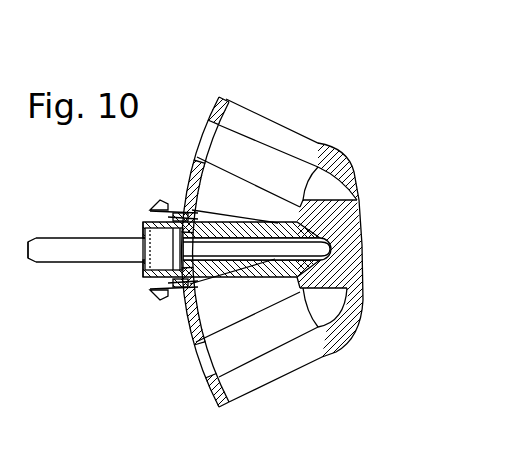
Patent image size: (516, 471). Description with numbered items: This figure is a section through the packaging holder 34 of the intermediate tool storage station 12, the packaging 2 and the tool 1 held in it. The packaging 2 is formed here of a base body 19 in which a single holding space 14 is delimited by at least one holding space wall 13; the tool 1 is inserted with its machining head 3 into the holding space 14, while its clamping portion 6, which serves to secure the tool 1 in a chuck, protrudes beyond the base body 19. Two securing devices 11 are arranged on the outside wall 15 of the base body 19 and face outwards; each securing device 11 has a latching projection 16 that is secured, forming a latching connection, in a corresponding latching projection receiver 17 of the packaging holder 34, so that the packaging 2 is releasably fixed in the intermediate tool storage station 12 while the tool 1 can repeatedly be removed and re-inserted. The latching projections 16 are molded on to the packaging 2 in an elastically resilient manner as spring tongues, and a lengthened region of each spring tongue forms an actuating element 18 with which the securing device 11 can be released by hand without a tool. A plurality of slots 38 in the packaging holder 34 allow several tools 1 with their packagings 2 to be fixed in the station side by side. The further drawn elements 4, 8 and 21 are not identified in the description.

The tool 1 is at (160, 252).
The packaging 2 is at (292, 177).
The machining head 3 is at (292, 248).
The holder 4 is at (4, 387).
The clamping portion 6 is at (50, 250).
The shaft tip 8 is at (14, 243).
The securing device 11 is at (205, 280).
The intermediate tool storage station 12 is at (336, 250).
The holding space wall 13 is at (300, 218).
The holding space 14 is at (267, 254).
The outside wall 15 is at (264, 237).
The latching projection 16 is at (192, 208).
The latching projection receiver 17 is at (185, 216).
The actuating element 18 is at (157, 203).
The base body 19 is at (272, 223).
The sleeve 21 is at (265, 238).
The packaging holder 34 is at (338, 275).
The slots 38 is at (239, 243).